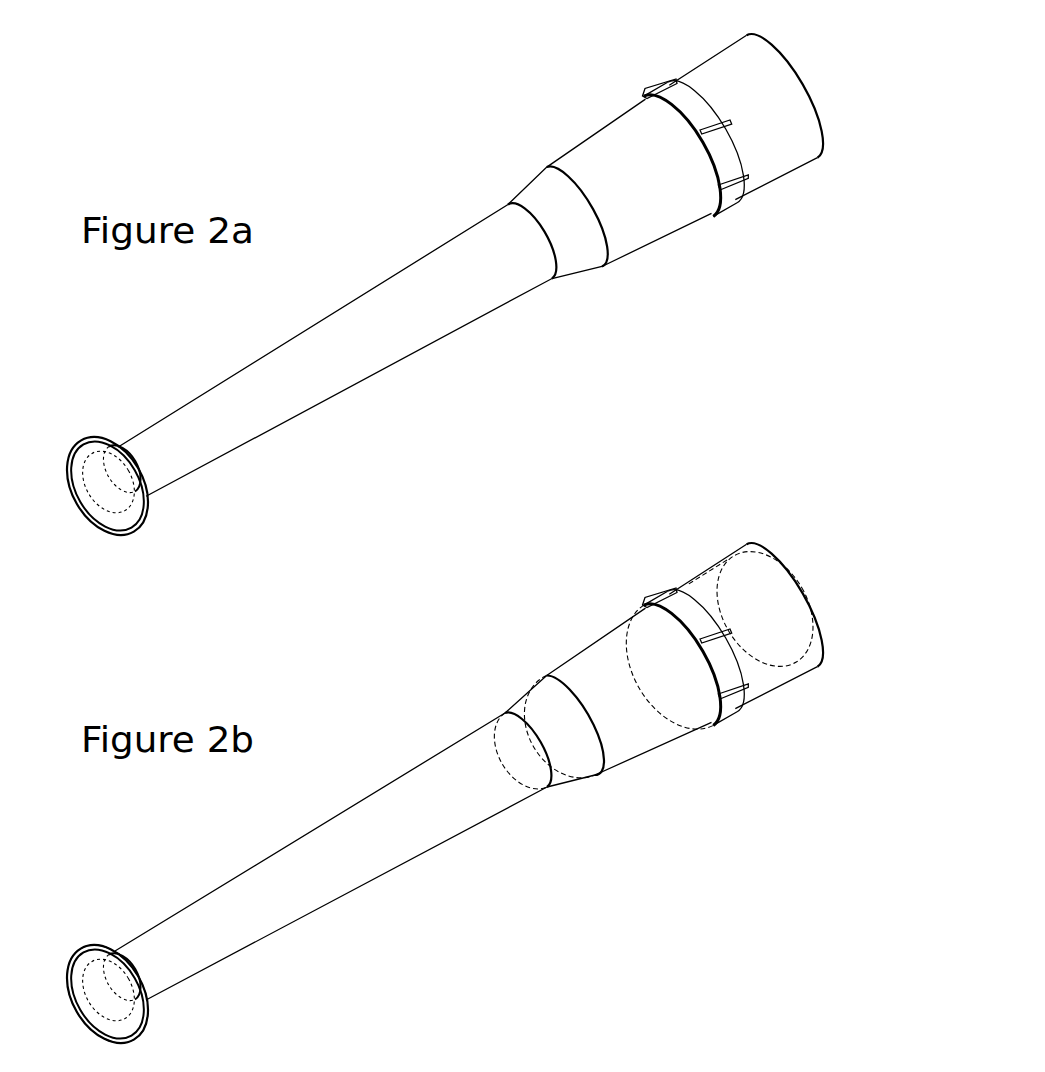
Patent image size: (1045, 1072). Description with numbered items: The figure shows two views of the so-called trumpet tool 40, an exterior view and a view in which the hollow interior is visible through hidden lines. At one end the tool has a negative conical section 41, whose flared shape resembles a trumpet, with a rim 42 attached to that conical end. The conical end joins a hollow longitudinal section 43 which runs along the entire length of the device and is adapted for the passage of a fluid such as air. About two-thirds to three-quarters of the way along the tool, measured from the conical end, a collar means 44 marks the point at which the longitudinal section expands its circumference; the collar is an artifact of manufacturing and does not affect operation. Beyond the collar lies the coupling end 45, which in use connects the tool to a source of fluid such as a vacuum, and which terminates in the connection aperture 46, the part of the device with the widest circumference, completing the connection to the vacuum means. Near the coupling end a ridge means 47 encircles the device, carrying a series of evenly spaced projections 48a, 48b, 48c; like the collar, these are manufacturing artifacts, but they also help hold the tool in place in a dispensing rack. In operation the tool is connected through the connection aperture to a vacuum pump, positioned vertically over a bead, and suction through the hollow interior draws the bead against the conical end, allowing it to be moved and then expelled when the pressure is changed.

The trumpet tool 40 is at (350, 893).
The negative conical section 41 is at (64, 985).
The rim 42 is at (88, 942).
The hollow longitudinal section 43 is at (274, 910).
The collar means 44 is at (528, 690).
The coupling end 45 is at (710, 566).
The connection aperture 46 is at (802, 580).
The ridge means 47 is at (731, 670).
The projection 48a is at (653, 597).
The projection 48b is at (733, 633).
The projection 48c is at (748, 692).